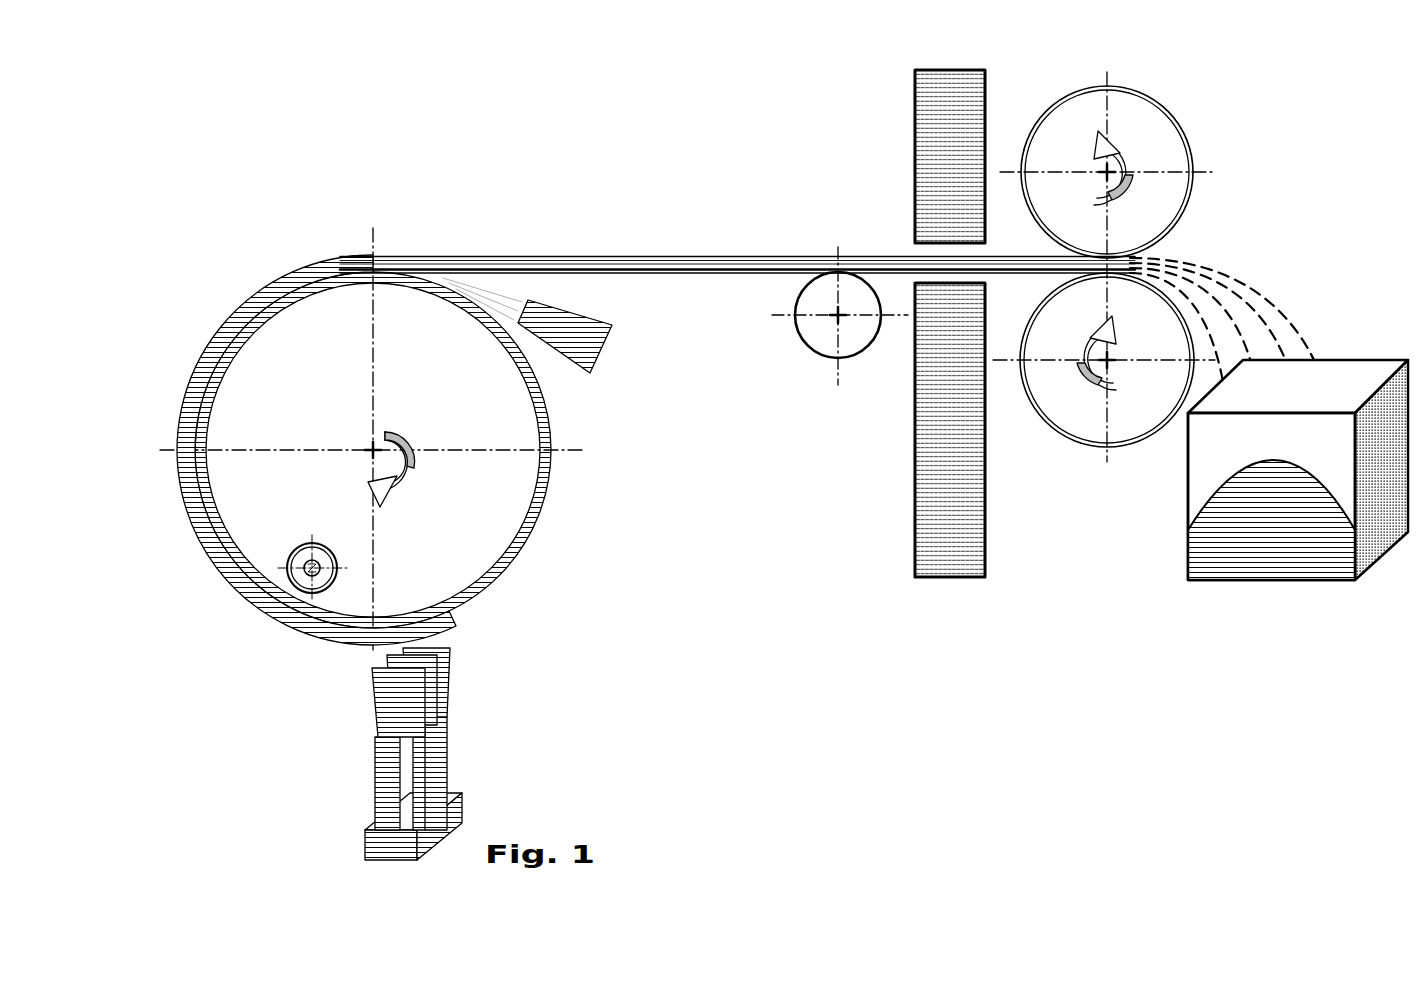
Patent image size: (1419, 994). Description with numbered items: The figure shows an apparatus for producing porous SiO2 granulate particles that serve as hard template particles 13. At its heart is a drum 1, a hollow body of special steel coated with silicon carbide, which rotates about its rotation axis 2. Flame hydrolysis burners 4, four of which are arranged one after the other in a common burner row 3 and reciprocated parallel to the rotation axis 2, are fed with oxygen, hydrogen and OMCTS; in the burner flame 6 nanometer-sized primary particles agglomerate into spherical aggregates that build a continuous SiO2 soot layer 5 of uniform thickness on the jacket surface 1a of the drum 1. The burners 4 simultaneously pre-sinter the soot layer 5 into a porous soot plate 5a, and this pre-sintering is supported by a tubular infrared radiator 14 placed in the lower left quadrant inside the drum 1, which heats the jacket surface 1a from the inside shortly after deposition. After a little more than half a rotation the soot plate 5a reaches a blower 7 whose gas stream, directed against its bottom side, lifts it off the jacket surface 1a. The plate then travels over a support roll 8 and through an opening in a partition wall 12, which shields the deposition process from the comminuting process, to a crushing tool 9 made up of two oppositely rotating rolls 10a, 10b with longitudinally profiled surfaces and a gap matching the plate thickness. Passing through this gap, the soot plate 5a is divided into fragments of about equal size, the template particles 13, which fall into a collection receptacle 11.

The drum 1 is at (552, 465).
The jacket surface 1a is at (570, 532).
The rotation axis 2 is at (375, 452).
The burner row 3 is at (352, 840).
The flame hydrolysis burners 4 is at (388, 785).
The SiO2 soot layer 5 is at (360, 635).
The soot plate 5a is at (712, 256).
The burner flame 6 is at (440, 675).
The blower 7 is at (578, 345).
The support roll 8 is at (832, 325).
The crushing tool 9 is at (1140, 323).
The roll 10a is at (1147, 170).
The roll 10b is at (1115, 408).
The collection receptacle 11 is at (1355, 377).
The partition wall 12 is at (930, 430).
The template particles 13 is at (1310, 286).
The tubular infrared radiator 14 is at (298, 587).